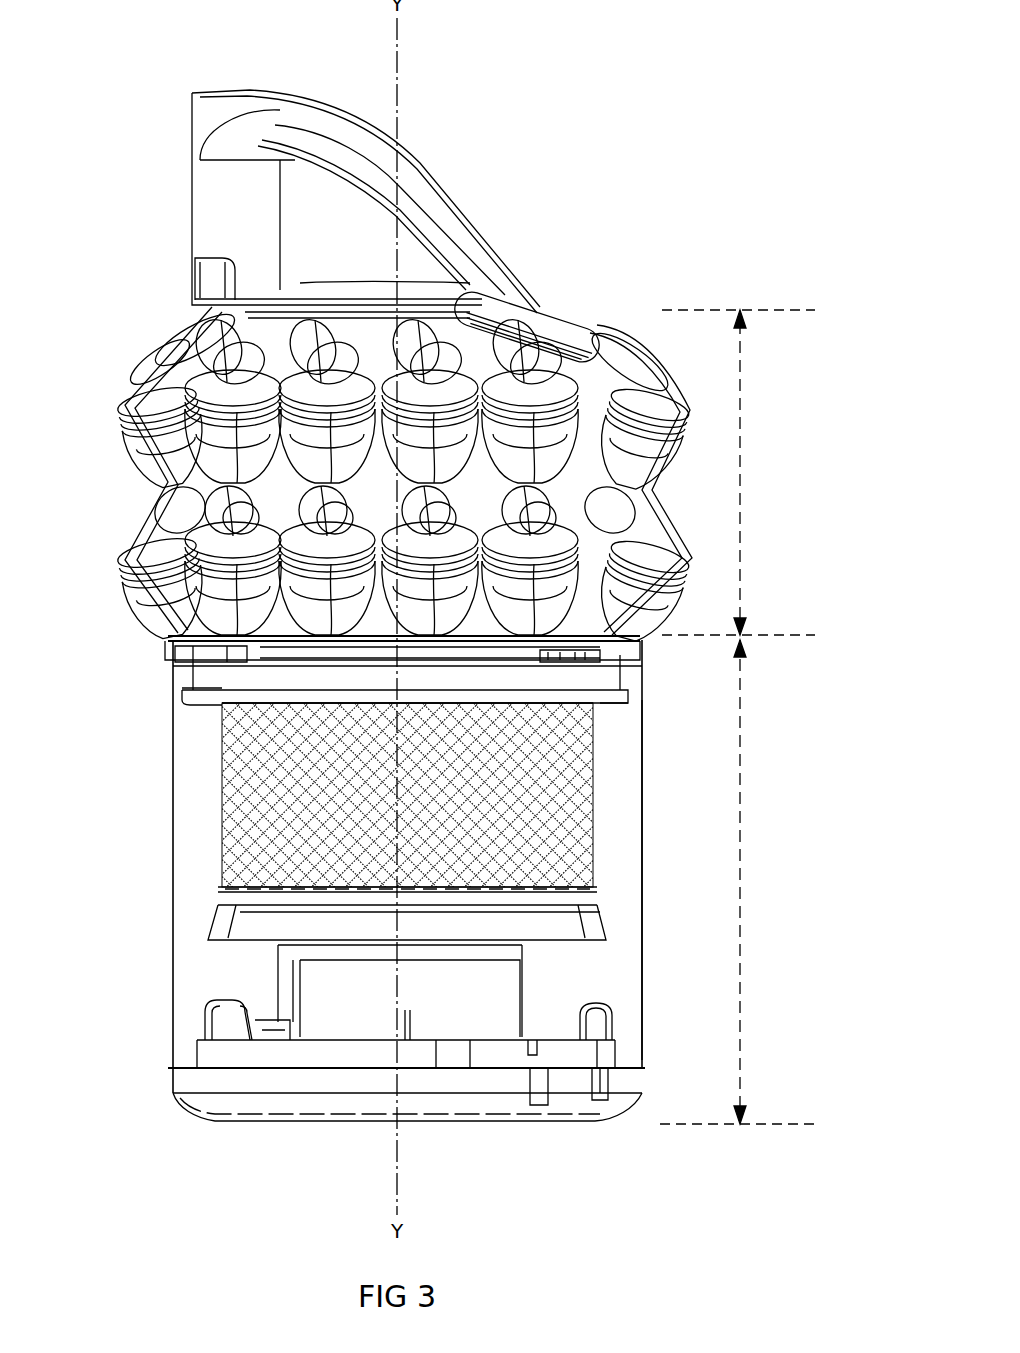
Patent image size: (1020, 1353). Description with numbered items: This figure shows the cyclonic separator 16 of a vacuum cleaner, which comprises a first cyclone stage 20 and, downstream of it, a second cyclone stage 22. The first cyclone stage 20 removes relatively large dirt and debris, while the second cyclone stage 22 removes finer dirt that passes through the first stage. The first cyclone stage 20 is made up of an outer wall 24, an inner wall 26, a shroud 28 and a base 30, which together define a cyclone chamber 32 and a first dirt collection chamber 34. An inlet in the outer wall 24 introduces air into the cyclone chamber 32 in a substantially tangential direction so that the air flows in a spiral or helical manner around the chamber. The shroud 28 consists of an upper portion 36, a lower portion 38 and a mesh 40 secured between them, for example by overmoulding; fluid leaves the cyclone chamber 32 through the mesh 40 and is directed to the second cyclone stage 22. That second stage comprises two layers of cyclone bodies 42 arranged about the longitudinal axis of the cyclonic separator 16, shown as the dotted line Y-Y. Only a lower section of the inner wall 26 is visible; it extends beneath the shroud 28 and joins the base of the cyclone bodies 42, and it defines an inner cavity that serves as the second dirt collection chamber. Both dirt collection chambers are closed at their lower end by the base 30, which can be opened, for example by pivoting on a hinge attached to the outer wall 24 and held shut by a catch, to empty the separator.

The cyclonic separator 16 is at (455, 646).
The first cyclone stage 20 is at (455, 921).
The second cyclone stage 22 is at (456, 477).
The outer wall 24 is at (642, 950).
The inner wall 26 is at (320, 975).
The shroud 28 is at (205, 890).
The base 30 is at (487, 1110).
The cyclone chamber 32 is at (607, 821).
The first dirt collection chamber 34 is at (545, 1007).
The upper portion 36 is at (215, 701).
The lower portion 38 is at (235, 915).
The mesh 40 is at (265, 811).
The cyclone bodies 42 is at (178, 583).